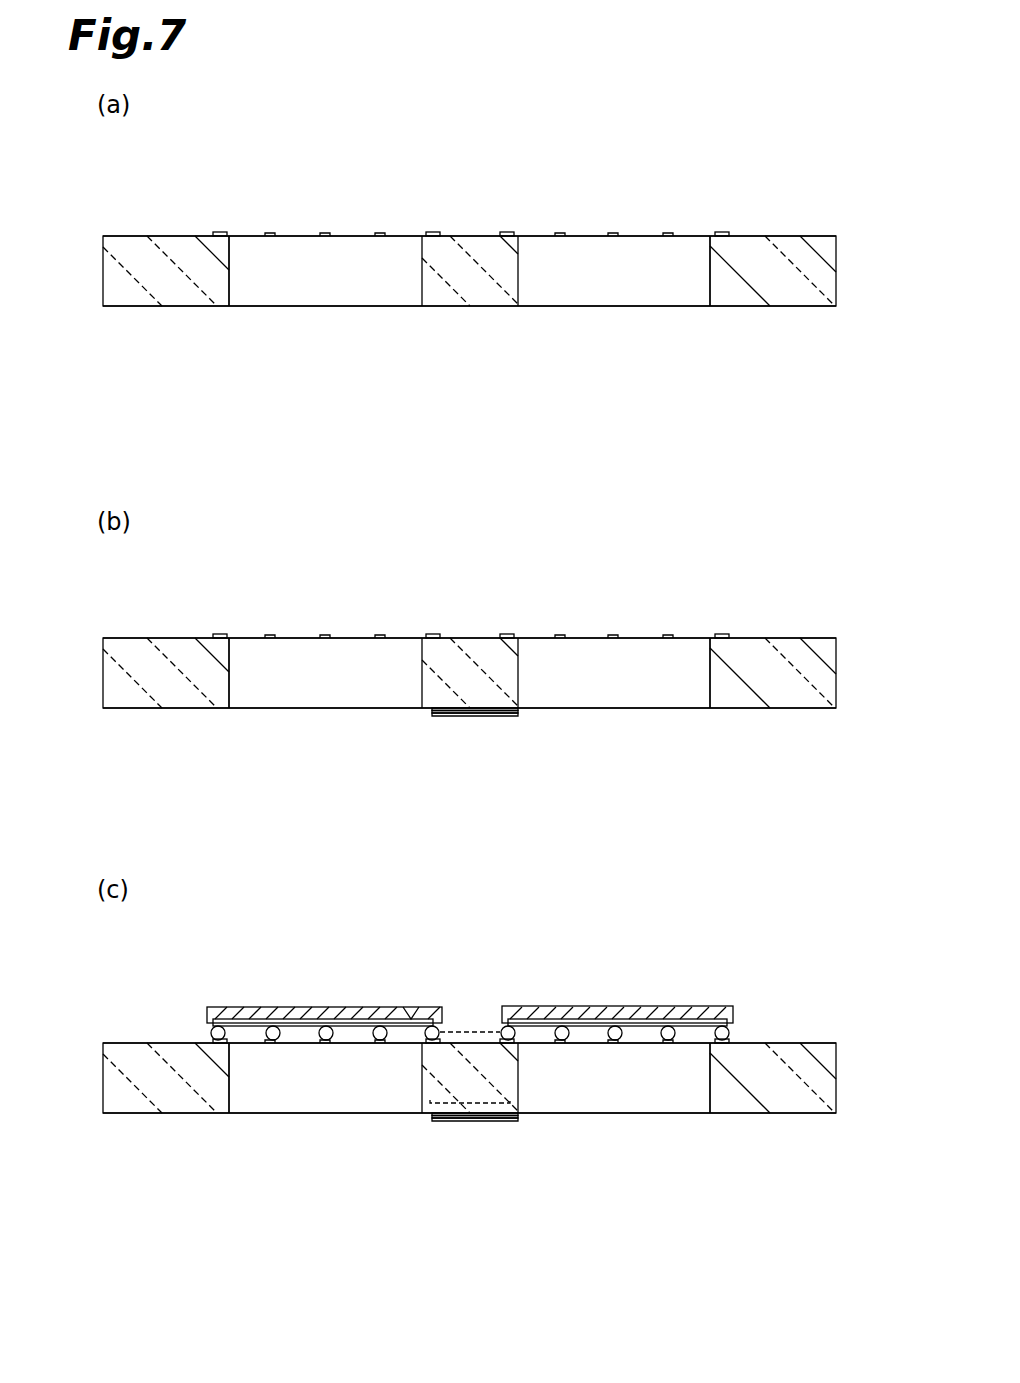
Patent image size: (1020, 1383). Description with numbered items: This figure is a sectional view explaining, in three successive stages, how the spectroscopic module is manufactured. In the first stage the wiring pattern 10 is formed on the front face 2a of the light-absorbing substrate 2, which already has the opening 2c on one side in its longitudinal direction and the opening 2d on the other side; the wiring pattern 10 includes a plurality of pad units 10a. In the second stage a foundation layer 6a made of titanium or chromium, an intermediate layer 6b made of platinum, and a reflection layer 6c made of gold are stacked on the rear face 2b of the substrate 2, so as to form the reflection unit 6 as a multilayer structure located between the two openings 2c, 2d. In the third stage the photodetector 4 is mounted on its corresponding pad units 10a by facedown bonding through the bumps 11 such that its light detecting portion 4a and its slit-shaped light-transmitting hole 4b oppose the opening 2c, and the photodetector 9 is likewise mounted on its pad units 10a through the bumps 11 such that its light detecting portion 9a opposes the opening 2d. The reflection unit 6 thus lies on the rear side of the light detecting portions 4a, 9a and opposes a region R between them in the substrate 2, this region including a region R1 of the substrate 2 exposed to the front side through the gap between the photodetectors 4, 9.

The substrate 2 is at (757, 250).
The front face of the substrate 2a is at (778, 235).
The rear face of the substrate 2b is at (780, 307).
The opening 2c is at (229, 293).
The opening 2d is at (710, 293).
The photodetector 4 is at (252, 1007).
The light detecting portion 4a is at (300, 1021).
The light-transmitting hole 4b is at (410, 1008).
The reflection unit 6 is at (534, 955).
The foundation layer 6a is at (519, 711).
The intermediate layer 6b is at (519, 713).
The reflection layer 6c is at (519, 715).
The photodetector 9 is at (595, 1007).
The light detecting portion 9a is at (643, 1021).
The wiring pattern 10 is at (224, 224).
The pad units 10a is at (327, 235).
The bumps 11 is at (213, 1028).
The region R is at (467, 1098).
The region R1 is at (467, 1027).